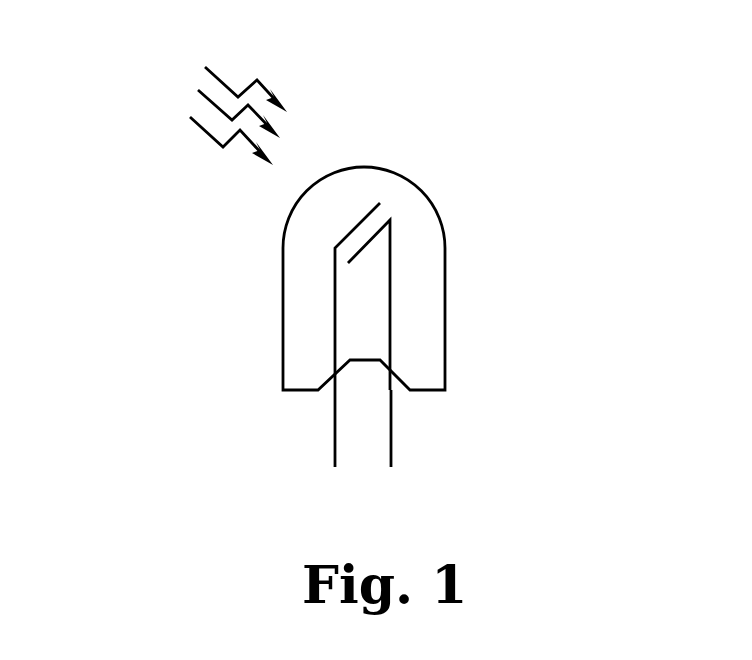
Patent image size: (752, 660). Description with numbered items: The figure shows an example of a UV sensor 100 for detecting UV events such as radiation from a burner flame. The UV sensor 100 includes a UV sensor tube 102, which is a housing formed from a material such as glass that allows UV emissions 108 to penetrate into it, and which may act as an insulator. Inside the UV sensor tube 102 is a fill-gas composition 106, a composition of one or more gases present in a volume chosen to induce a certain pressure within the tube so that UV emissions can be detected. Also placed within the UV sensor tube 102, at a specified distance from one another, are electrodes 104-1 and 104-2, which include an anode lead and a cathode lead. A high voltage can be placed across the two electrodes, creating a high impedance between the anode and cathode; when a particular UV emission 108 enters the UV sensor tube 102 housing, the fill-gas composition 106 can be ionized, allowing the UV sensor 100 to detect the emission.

The UV sensor 100 is at (500, 85).
The UV sensor tube 102 is at (445, 238).
The electrode 104-1 is at (333, 435).
The electrode 104-2 is at (393, 435).
The fill-gas composition 106 is at (430, 318).
The UV emissions 108 is at (173, 77).